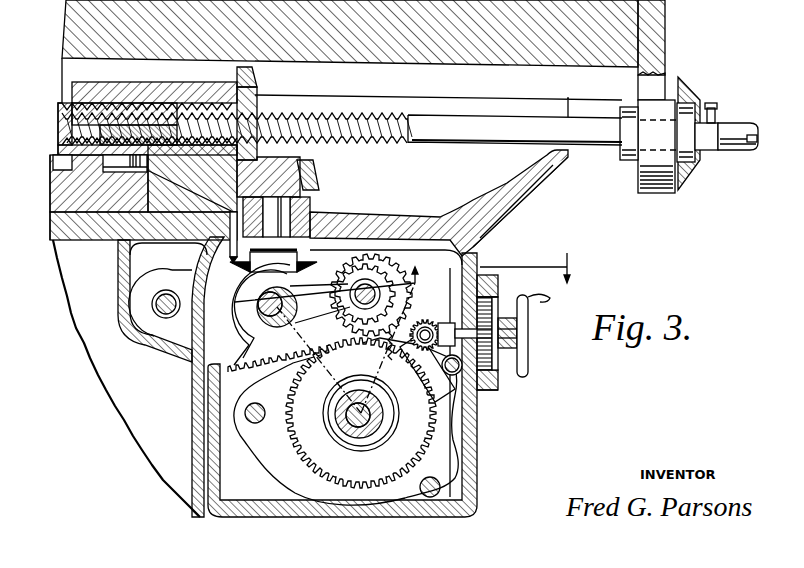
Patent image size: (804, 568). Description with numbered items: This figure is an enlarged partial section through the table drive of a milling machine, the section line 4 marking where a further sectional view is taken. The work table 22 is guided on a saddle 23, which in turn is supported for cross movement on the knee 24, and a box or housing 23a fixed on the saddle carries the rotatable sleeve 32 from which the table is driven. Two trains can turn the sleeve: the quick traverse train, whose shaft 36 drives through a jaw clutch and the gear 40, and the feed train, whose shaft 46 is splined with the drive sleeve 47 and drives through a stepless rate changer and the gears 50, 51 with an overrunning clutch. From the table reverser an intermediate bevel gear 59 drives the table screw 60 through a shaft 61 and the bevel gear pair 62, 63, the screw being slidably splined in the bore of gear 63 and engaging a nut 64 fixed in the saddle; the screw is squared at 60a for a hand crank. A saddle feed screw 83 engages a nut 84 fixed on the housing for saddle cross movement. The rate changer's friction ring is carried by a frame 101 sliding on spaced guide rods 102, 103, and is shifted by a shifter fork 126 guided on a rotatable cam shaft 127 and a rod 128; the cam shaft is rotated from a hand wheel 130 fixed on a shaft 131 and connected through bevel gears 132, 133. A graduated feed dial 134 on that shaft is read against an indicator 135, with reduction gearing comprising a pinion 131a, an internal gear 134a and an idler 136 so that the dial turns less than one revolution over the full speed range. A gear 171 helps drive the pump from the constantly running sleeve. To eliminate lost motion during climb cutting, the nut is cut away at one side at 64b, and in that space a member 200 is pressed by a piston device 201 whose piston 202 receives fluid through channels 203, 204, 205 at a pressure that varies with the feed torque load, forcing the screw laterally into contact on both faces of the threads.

The table 22 is at (72, 34).
The saddle 23 is at (66, 192).
The housing 23a is at (470, 471).
The knee 24 is at (53, 245).
The rotatable sleeve 32 is at (274, 323).
The shaft 36 is at (350, 297).
The gear 40 is at (372, 260).
The shaft 46 is at (356, 430).
The sleeve 47 is at (372, 432).
The gear 50 is at (413, 434).
The gear 51 is at (266, 361).
The intermediate bevel gear 59 is at (236, 272).
The table screw 60 is at (345, 140).
The squared end 60a is at (740, 142).
The shaft 61 is at (310, 203).
The bevel gear 62 is at (319, 180).
The bevel gear 63 is at (257, 81).
The nut 64 is at (147, 102).
The cut-away portion of nut 64b is at (150, 128).
The saddle feed screw 83 is at (162, 320).
The nut 84 is at (163, 290).
The frame 101 is at (296, 466).
The guide rod 102 is at (257, 425).
The guide rod 103 is at (433, 498).
The shifter fork 126 is at (427, 362).
The cam shaft 127 is at (428, 316).
The rod 128 is at (454, 374).
The hand wheel 130 is at (528, 340).
The shaft 131 is at (517, 328).
The pinion 131a is at (497, 381).
The bevel gear 132 is at (429, 326).
The bevel gear 133 is at (413, 328).
The graduated feed dial 134 is at (497, 391).
The internal gear 134a is at (493, 354).
The indicator 135 is at (497, 280).
The idler 136 is at (504, 292).
The gear 171 is at (358, 258).
The member 200 is at (62, 152).
The piston device 201 is at (104, 163).
The piston 202 is at (112, 241).
The channel 203 is at (200, 216).
The channel 204 is at (268, 178).
The channel 205 is at (273, 261).
The section line 4 is at (408, 333).